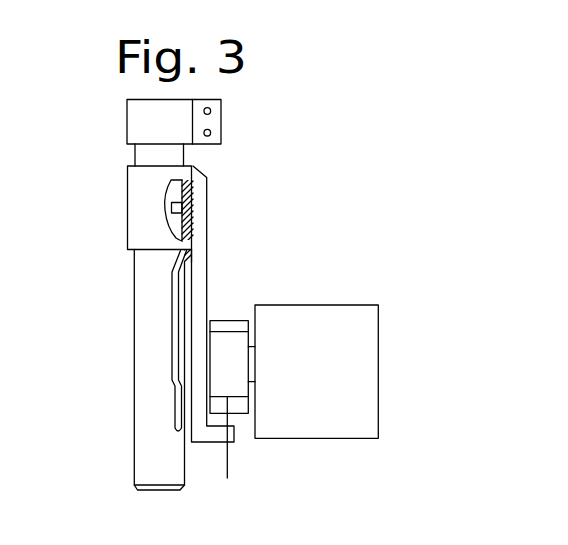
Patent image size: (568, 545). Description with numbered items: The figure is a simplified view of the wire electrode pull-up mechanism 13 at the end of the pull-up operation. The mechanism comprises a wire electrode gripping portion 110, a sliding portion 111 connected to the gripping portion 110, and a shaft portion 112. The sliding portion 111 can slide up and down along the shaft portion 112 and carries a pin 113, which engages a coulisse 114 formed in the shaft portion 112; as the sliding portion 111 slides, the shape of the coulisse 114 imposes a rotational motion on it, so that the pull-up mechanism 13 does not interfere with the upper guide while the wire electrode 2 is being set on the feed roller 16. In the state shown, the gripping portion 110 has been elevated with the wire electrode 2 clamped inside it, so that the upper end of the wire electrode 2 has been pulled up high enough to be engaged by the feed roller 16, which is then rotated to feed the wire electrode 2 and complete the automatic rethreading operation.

The wire electrode pull-up mechanism 13 is at (103, 270).
The sliding portion 111 is at (136, 212).
The pin 113 is at (188, 211).
The wire electrode gripping portion 110 is at (207, 432).
The shaft portion 112 is at (137, 392).
The coulisse 114 is at (172, 303).
The feed roller 16 is at (240, 387).
The wire electrode 2 is at (228, 474).